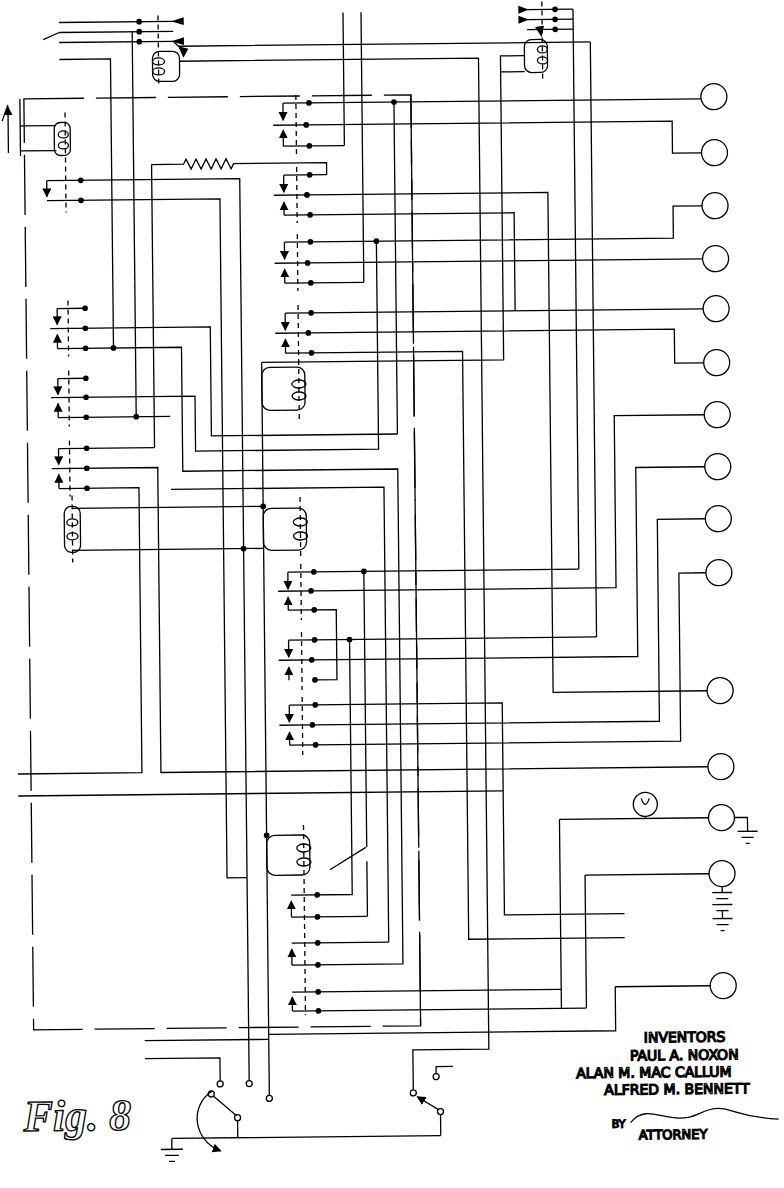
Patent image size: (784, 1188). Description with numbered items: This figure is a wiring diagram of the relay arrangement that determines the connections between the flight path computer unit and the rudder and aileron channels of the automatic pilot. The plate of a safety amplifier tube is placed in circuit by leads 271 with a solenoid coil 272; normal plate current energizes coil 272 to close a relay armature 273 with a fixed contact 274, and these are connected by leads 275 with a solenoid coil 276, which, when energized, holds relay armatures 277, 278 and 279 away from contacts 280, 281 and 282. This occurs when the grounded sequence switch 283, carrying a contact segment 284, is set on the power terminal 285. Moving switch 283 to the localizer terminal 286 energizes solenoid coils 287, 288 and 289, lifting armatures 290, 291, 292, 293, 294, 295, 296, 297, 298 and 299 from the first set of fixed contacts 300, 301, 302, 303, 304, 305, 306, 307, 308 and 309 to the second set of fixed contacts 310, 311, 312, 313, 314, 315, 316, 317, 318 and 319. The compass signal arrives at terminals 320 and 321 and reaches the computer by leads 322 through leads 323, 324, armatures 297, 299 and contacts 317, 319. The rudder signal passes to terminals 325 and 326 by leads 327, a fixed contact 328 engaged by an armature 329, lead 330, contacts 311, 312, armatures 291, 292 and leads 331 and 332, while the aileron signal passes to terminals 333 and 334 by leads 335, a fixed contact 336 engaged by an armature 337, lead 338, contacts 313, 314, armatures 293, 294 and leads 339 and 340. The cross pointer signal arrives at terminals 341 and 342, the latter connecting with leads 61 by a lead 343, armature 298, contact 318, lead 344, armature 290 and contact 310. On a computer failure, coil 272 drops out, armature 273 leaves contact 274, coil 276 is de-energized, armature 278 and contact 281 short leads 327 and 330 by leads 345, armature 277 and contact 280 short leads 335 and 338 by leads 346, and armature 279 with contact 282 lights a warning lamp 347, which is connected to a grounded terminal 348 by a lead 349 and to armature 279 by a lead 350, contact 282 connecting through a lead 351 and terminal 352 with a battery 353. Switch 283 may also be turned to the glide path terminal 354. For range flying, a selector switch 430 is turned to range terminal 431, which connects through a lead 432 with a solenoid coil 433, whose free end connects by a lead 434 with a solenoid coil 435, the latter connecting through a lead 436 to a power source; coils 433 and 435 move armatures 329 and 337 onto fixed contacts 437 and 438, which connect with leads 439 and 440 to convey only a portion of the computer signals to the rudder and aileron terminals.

The leads 61 is at (108, 774).
The leads 271 is at (16, 116).
The solenoid coil 272 is at (72, 140).
The relay armature 273 is at (82, 200).
The fixed contact 274 is at (48, 197).
The leads 275 is at (238, 266).
The solenoid coil 276 is at (305, 840).
The relay armature 277 is at (309, 902).
The relay armature 278 is at (309, 946).
The relay armature 279 is at (312, 990).
The contact 280 is at (283, 905).
The contact 281 is at (283, 952).
The contact 282 is at (312, 1006).
The grounded sequence switch 283 is at (233, 1116).
The contact segment 284 is at (218, 1151).
The power terminal 285 is at (209, 1082).
The localizer terminal 286 is at (268, 1071).
The solenoid coil 287 is at (80, 528).
The solenoid coil 288 is at (306, 528).
The solenoid coil 289 is at (306, 392).
The relay armature 290 is at (76, 470).
The relay armature 291 is at (76, 398).
The relay armature 292 is at (74, 328).
The relay armature 293 is at (305, 595).
The relay armature 294 is at (296, 664).
The relay armature 295 is at (296, 731).
The relay armature 296 is at (305, 337).
The relay armature 297 is at (305, 266).
The relay armature 298 is at (305, 199).
The relay armature 299 is at (305, 127).
The fixed contact 300 is at (55, 462).
The fixed contact 301 is at (55, 392).
The fixed contact 302 is at (55, 322).
The fixed contact 303 is at (283, 602).
The fixed contact 304 is at (283, 672).
The fixed contact 305 is at (283, 737).
The fixed contact 306 is at (283, 326).
The fixed contact 307 is at (283, 255).
The fixed contact 308 is at (283, 188).
The fixed contact 309 is at (283, 116).
The fixed contact 310 is at (55, 476).
The fixed contact 311 is at (55, 407).
The fixed contact 312 is at (55, 338).
The fixed contact 313 is at (283, 584).
The fixed contact 314 is at (292, 642).
The fixed contact 315 is at (293, 710).
The fixed contact 316 is at (283, 341).
The fixed contact 317 is at (283, 271).
The fixed contact 318 is at (283, 204).
The fixed contact 319 is at (283, 132).
The terminal 320 is at (718, 144).
The terminal 321 is at (718, 250).
The leads 322 is at (348, 40).
The lead 323 is at (451, 264).
The lead 324 is at (516, 124).
The terminal 325 is at (716, 88).
The terminal 326 is at (718, 197).
The leads 327 is at (62, 57).
The fixed contact 328 is at (186, 22).
The armature 329 is at (186, 41).
The lead 330 is at (136, 131).
The lead 331 is at (445, 243).
The lead 332 is at (443, 103).
The terminal 333 is at (718, 407).
The terminal 334 is at (718, 459).
The leads 335 is at (594, 45).
The fixed contact 336 is at (522, 15).
The armature 337 is at (522, 24).
The lead 338 is at (575, 161).
The lead 339 is at (455, 590).
The lead 340 is at (456, 658).
The terminal 341 is at (718, 682).
The terminal 342 is at (718, 758).
The lead 343 is at (549, 478).
The lead 344 is at (598, 773).
The leads 345 is at (318, 487).
The leads 346 is at (356, 856).
The warning lamp 347 is at (644, 797).
The grounded terminal 348 is at (718, 810).
The lead 349 is at (652, 824).
The lead 350 is at (554, 862).
The lead 351 is at (588, 988).
The terminal 352 is at (704, 884).
The battery 353 is at (708, 906).
The glide path terminal 354 is at (265, 1098).
The selector switch 430 is at (435, 1101).
The range terminal 431 is at (402, 1094).
The lead 432 is at (482, 472).
The solenoid coil 433 is at (182, 74).
The lead 434 is at (304, 45).
The solenoid coil 435 is at (551, 72).
The lead 436 is at (498, 168).
The fixed contact 437 is at (196, 59).
The fixed contact 438 is at (519, 39).
The lead 439 is at (126, 44).
The lead 440 is at (573, 285).